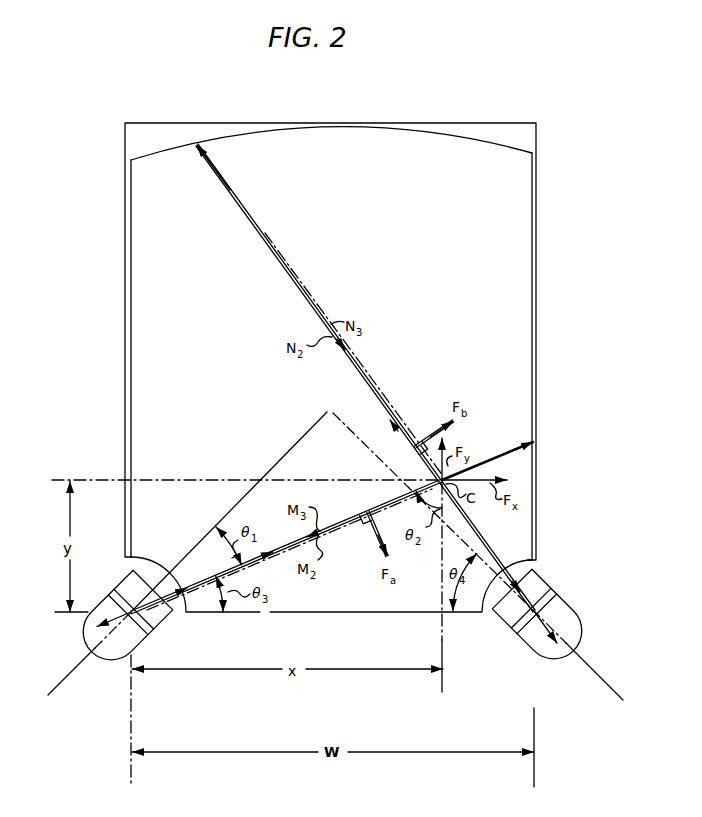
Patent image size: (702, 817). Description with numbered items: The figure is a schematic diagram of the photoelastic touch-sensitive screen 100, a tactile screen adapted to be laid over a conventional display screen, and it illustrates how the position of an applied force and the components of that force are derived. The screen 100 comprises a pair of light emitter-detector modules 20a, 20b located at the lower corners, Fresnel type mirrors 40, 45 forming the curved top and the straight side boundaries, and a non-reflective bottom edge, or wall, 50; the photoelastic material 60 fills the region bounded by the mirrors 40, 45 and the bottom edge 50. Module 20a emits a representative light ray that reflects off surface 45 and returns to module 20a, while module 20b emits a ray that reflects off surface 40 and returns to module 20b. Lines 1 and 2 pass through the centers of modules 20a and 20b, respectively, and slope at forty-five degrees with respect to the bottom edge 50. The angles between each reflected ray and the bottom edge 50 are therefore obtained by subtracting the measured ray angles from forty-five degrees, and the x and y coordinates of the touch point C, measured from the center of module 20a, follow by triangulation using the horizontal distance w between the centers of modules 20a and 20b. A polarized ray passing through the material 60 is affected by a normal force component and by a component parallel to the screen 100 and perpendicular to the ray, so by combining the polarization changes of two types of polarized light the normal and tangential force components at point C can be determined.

The line 1 is at (62, 682).
The line 2 is at (596, 674).
The light emitter-detector module 20a is at (122, 625).
The light emitter-detector module 20b is at (542, 624).
The Fresnel type mirror 40 is at (357, 129).
The Fresnel type mirror 45 is at (133, 322).
The bottom edge 50 is at (368, 613).
The photoelastic material 60 is at (219, 264).
The photoelastic touch-sensitive screen 100 is at (305, 700).